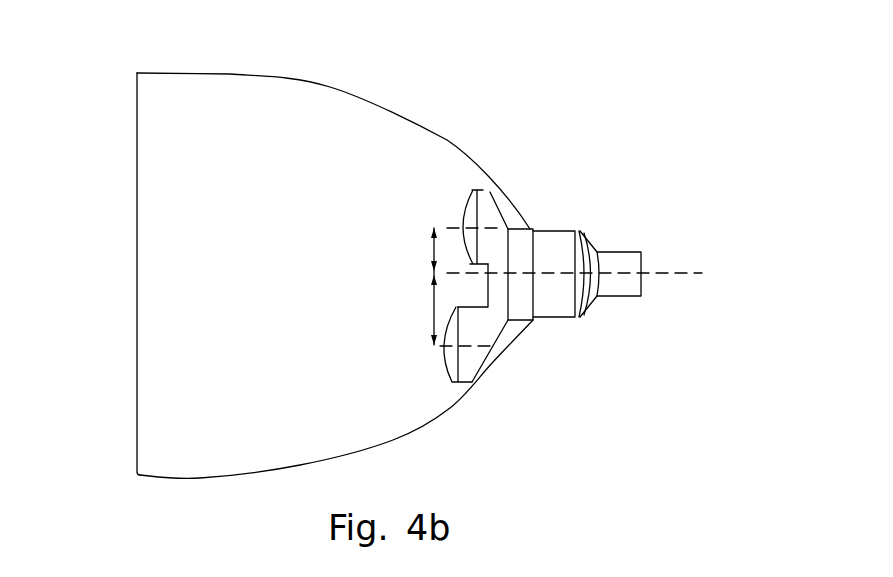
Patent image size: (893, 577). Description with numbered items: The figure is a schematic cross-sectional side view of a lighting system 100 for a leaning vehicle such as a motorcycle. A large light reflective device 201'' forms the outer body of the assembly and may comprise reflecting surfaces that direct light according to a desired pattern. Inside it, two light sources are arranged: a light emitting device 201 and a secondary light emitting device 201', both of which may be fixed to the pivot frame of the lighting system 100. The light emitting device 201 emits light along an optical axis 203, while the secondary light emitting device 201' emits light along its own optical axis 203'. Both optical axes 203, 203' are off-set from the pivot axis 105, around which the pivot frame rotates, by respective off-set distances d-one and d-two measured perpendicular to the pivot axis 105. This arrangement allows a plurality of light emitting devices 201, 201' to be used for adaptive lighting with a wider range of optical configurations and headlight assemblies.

The lighting system 100 is at (116, 29).
The light reflective device 201'' is at (335, 263).
The light emitting device 201 is at (435, 207).
The secondary light emitting device 201' is at (420, 363).
The optical axis 203 is at (427, 207).
The optical axis 203' is at (422, 366).
The pivot axis 105 is at (672, 273).